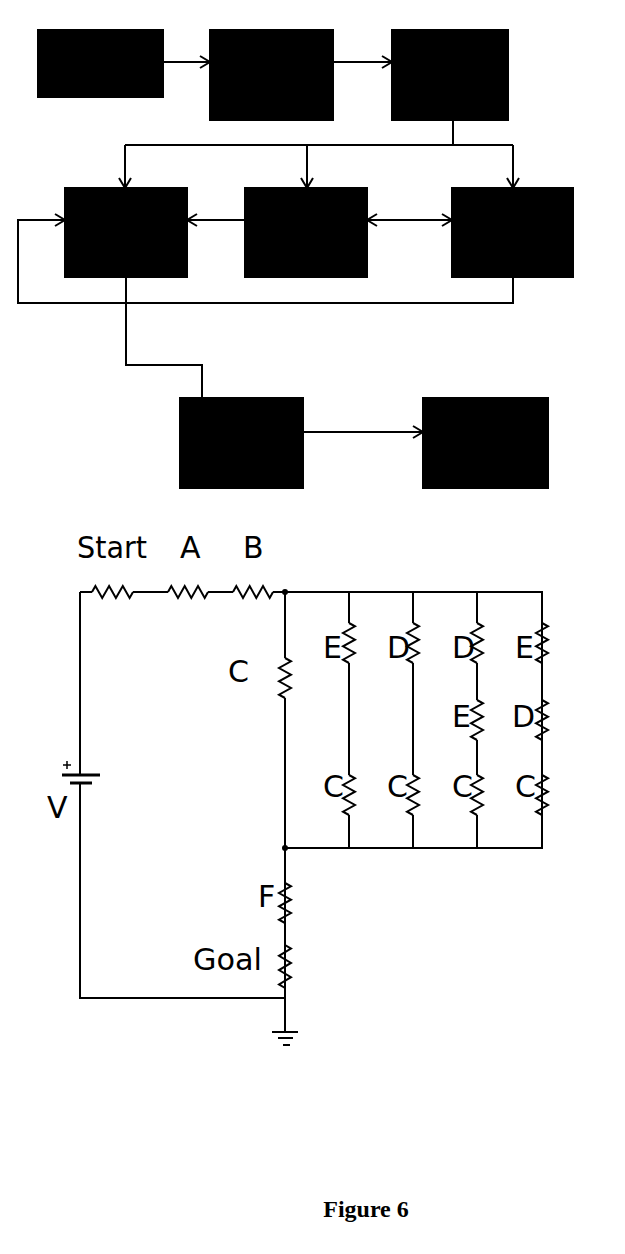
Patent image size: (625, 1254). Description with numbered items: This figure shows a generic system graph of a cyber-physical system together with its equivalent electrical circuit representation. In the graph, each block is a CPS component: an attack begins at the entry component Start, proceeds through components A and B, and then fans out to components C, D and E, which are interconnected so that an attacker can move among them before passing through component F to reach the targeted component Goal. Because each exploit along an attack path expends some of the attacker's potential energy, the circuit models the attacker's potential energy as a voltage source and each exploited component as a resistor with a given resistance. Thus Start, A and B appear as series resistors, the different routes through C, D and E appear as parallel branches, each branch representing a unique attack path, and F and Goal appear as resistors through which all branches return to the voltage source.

The entry component Start is at (100, 63).
The CPS component A is at (271, 75).
The CPS component B is at (450, 75).
The CPS component C is at (126, 232).
The CPS component D is at (306, 232).
The CPS component E is at (512, 232).
The CPS component F is at (241, 443).
The targeted component Goal is at (485, 443).